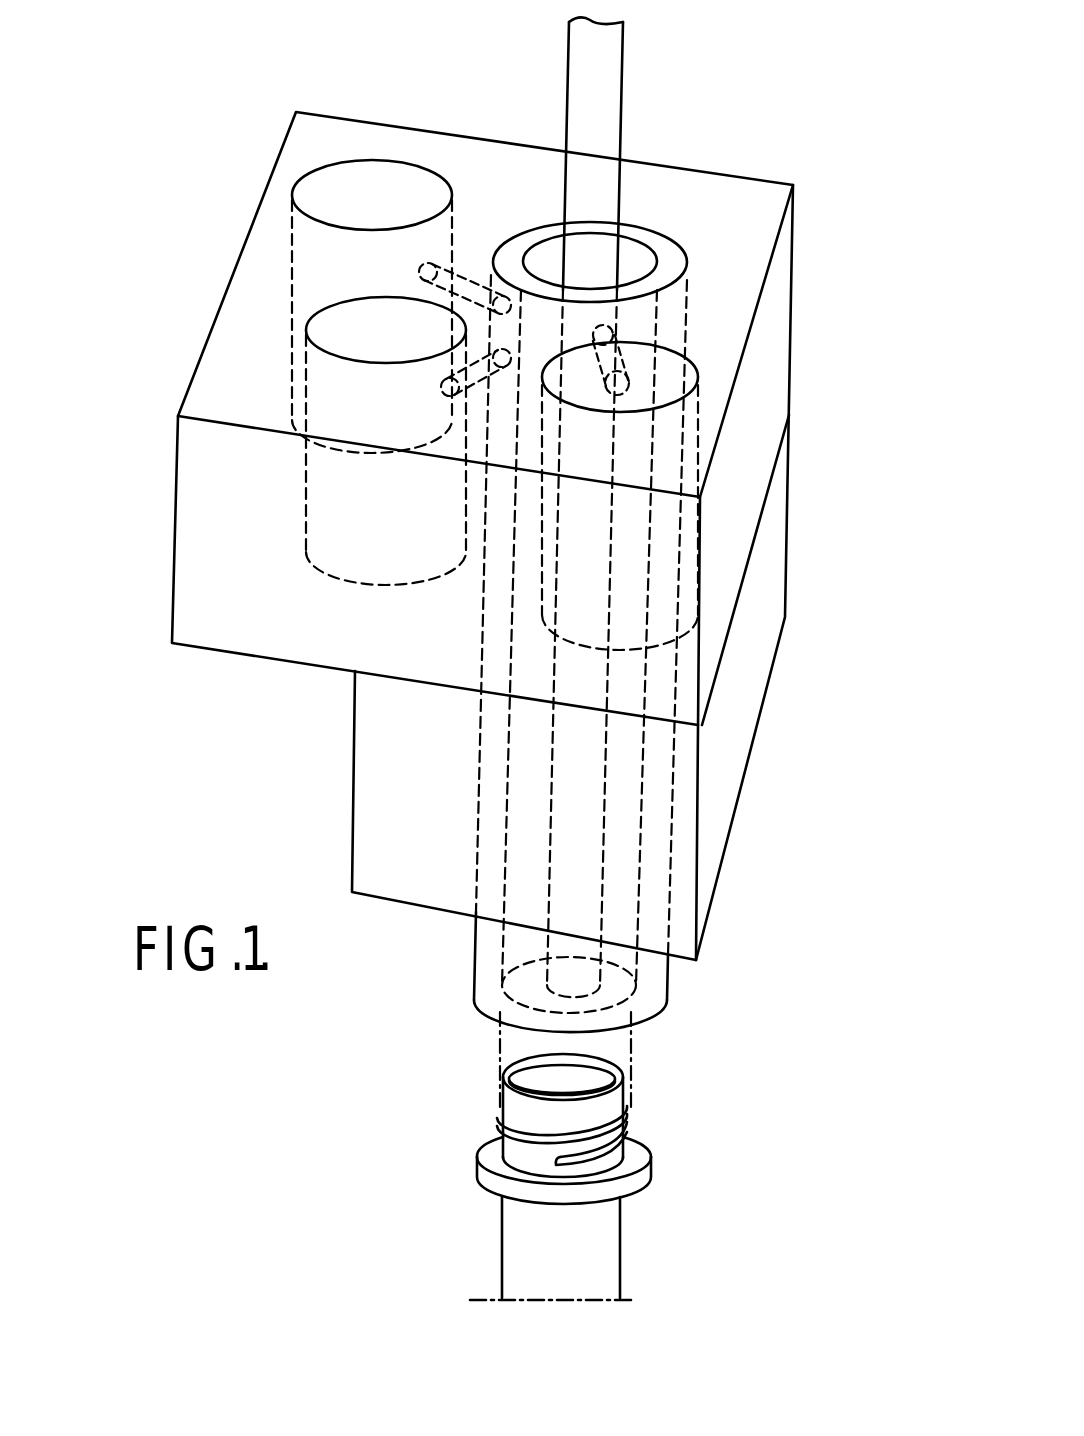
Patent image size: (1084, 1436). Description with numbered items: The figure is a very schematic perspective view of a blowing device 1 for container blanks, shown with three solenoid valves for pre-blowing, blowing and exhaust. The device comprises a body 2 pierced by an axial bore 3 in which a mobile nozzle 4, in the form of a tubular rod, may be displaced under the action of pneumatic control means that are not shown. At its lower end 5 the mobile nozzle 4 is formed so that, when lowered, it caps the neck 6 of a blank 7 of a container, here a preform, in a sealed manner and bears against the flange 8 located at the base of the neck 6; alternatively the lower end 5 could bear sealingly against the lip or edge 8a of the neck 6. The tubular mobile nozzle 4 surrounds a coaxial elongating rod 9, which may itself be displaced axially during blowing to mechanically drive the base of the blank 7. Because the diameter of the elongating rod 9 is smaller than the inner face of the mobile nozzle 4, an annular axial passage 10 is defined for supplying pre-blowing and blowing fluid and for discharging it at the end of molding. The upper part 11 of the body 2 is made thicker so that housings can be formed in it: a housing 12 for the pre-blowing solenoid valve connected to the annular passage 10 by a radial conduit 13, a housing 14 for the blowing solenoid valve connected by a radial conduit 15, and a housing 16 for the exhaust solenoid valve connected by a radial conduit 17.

The blowing device 1 is at (813, 452).
The body 2 is at (786, 679).
The axial bore 3 is at (668, 245).
The mobile nozzle 4 is at (457, 956).
The lower end 5 is at (483, 1010).
The neck 6 is at (600, 1137).
The blank 7 is at (637, 1210).
The flange 8 is at (490, 1154).
The lip 8a is at (583, 1068).
The elongating rod 9 is at (633, 66).
The annular axial passage 10 is at (546, 238).
The upper part 11 is at (207, 585).
The housing 12 is at (306, 201).
The radial conduit 13 is at (420, 272).
The housing 14 is at (308, 330).
The radial conduit 15 is at (442, 379).
The housing 16 is at (712, 368).
The radial conduit 17 is at (612, 387).